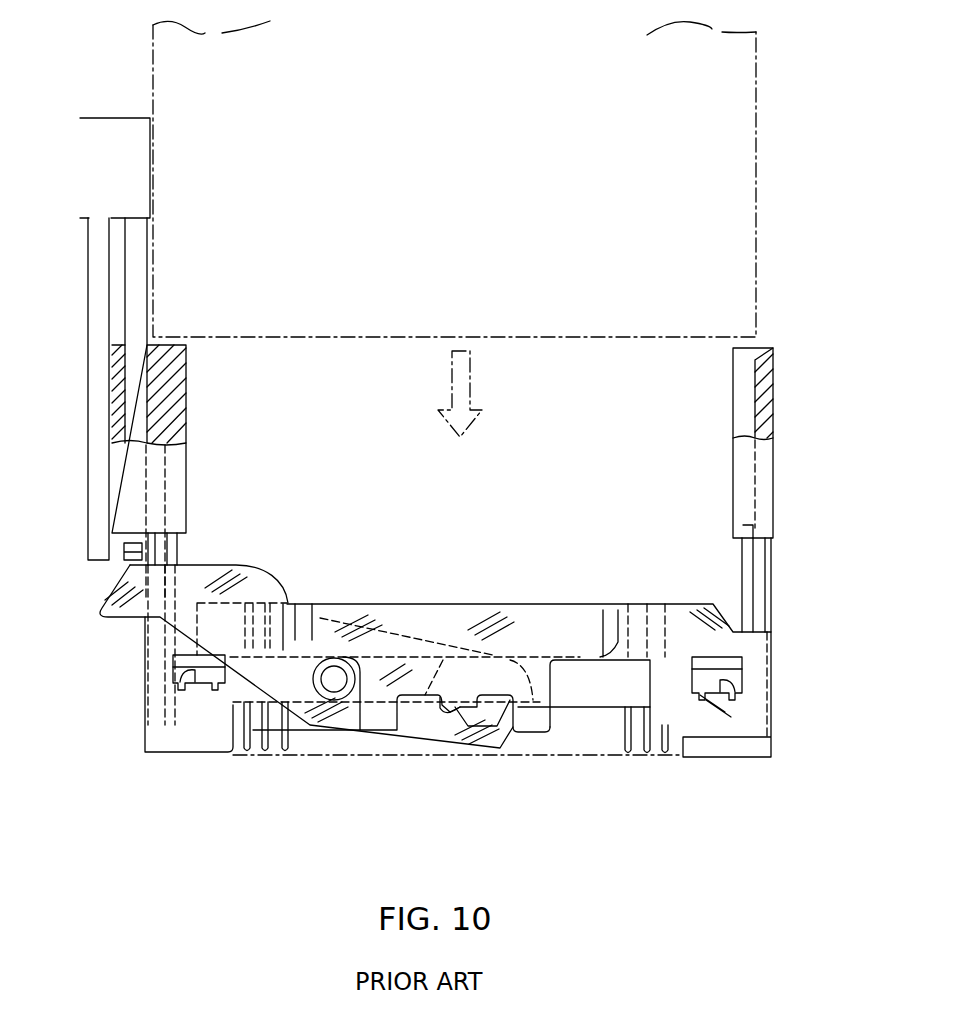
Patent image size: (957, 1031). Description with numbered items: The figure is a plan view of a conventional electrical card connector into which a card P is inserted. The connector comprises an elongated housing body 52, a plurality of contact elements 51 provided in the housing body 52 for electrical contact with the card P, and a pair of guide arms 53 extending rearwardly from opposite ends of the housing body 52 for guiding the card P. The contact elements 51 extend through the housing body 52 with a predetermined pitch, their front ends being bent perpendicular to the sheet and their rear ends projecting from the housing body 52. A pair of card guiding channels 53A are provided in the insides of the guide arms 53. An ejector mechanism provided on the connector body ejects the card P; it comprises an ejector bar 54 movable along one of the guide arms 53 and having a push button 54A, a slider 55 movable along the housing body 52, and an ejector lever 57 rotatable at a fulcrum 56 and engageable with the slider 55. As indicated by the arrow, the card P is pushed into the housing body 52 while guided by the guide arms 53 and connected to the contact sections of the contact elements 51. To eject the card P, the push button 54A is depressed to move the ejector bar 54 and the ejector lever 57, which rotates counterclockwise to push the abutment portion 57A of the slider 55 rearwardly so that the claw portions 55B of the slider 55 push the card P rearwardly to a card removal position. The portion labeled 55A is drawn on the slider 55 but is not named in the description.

The card P is at (732, 198).
The contact elements 51 is at (592, 657).
The housing body 52 is at (563, 693).
The guide arms 53 is at (162, 550).
The card guiding channels 53A is at (747, 563).
The ejector bar 54 is at (130, 300).
The push button 54A is at (93, 172).
The slider 55 is at (490, 645).
The spring 55A is at (457, 702).
The claw portions 55B is at (172, 660).
The fulcrum 56 is at (355, 708).
The ejector lever 57 is at (257, 670).
The abutment portion 57A is at (450, 715).